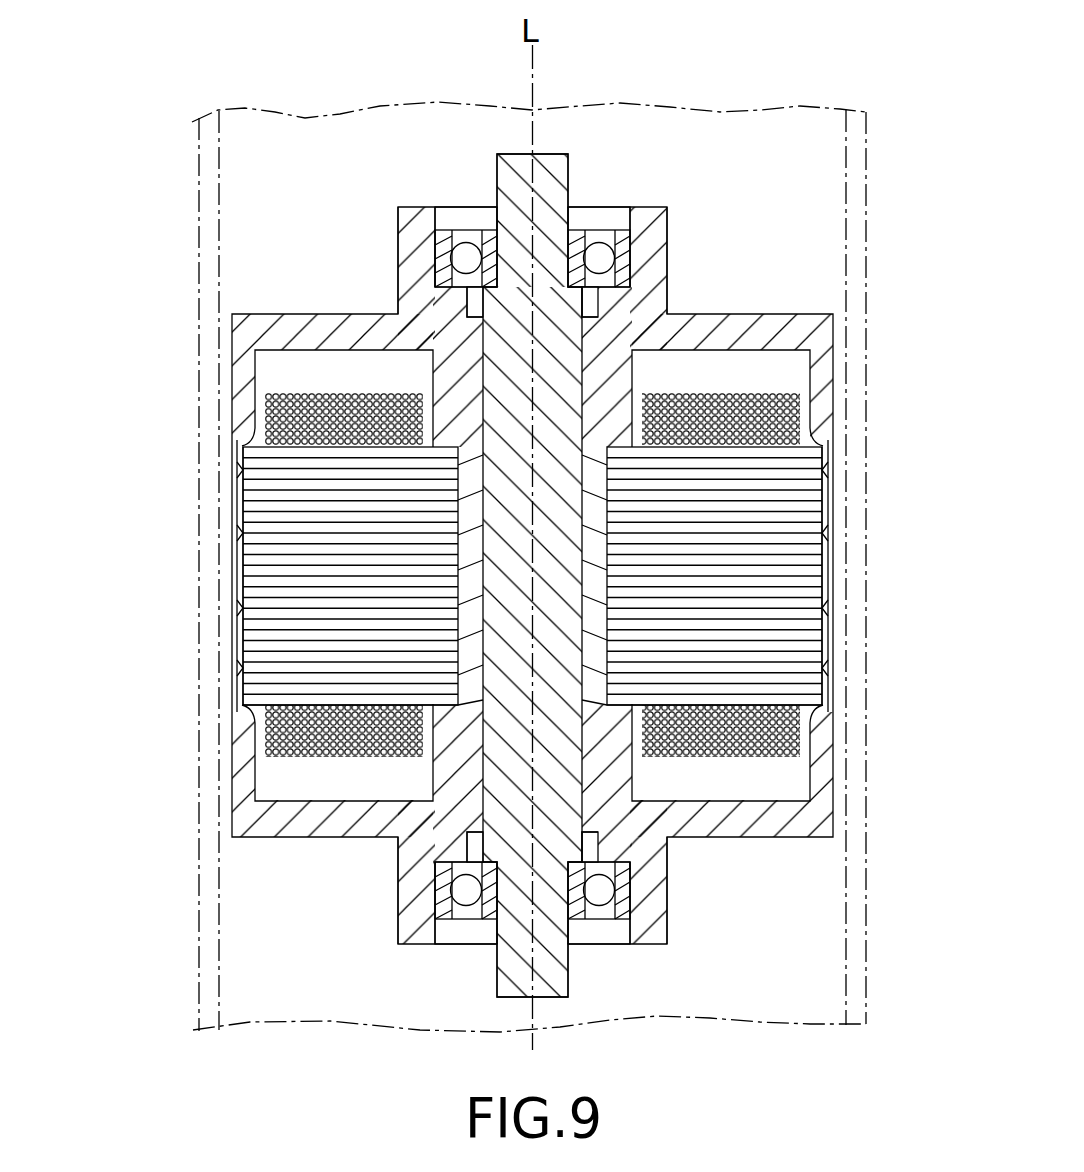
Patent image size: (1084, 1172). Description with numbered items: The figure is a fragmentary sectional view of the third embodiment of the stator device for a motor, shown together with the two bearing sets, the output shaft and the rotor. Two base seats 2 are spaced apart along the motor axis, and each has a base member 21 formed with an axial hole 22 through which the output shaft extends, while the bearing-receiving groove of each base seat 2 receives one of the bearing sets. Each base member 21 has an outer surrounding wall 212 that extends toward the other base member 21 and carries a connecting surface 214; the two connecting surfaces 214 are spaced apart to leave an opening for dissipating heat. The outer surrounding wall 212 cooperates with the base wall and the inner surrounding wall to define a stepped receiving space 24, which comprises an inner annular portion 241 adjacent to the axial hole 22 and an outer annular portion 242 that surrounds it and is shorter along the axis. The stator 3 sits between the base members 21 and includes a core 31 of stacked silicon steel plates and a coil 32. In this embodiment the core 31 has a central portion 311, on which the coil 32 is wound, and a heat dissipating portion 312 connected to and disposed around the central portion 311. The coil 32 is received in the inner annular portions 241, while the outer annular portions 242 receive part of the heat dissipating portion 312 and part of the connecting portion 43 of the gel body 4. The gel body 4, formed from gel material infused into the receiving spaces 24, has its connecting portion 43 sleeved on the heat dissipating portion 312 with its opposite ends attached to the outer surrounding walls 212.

The base seat 2 is at (672, 196).
The base member 21 is at (668, 222).
The axial hole 22 is at (580, 800).
The receiving space 24 is at (295, 358).
The inner annular portion 241 is at (255, 362).
The outer annular portion 242 is at (240, 432).
The outer surrounding wall 212 is at (824, 405).
The connecting surface 214 is at (832, 494).
The stator 3 is at (203, 287).
The core 31 is at (256, 512).
The central portion 311 is at (317, 689).
The heat dissipating portion 312 is at (242, 703).
The coil 32 is at (292, 418).
The gel body 4 is at (106, 518).
The connecting portion 43 is at (240, 552).